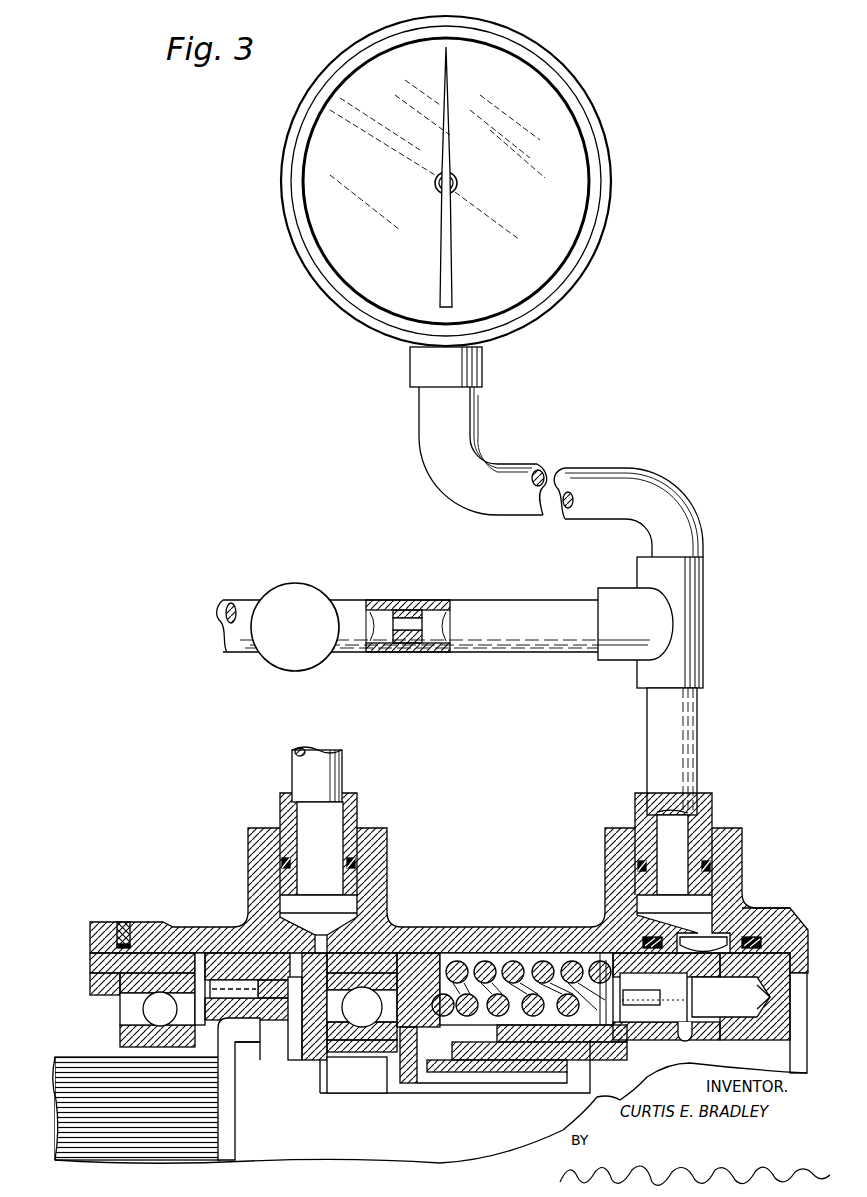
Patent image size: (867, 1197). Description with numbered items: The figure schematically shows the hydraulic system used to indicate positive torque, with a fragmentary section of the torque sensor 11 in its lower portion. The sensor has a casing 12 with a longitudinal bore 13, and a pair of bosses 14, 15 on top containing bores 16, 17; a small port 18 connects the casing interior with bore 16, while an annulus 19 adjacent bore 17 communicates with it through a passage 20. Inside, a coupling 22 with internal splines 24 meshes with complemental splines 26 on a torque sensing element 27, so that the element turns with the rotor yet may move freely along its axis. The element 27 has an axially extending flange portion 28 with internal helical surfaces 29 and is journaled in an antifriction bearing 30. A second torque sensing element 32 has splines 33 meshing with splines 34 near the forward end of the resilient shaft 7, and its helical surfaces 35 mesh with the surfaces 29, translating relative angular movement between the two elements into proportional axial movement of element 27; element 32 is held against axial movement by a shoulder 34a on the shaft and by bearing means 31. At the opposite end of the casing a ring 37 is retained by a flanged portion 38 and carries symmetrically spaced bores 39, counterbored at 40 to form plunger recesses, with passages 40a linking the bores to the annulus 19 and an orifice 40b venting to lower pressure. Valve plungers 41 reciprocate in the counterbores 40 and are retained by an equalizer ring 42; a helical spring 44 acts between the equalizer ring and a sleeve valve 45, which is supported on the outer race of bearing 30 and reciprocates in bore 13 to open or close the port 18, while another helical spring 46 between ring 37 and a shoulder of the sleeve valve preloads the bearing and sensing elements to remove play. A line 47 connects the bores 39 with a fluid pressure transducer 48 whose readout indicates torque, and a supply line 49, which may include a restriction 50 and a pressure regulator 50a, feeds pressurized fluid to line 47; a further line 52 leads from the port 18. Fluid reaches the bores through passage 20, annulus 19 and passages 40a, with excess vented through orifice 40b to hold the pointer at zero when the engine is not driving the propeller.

The resilient shaft 7 is at (355, 1163).
The torque sensor 11 is at (108, 916).
The casing 12 is at (568, 925).
The bore 13 is at (530, 955).
The boss 14 is at (258, 848).
The boss 15 is at (733, 848).
The bore 16 is at (297, 893).
The bore 17 is at (640, 848).
The port 18 is at (315, 935).
The annulus 19 is at (713, 945).
The passage 20 is at (698, 925).
The coupling 22 is at (575, 1062).
The internal splines 24 is at (490, 1068).
The splines 26 is at (430, 1065).
The torque sensing element 27 is at (320, 1055).
The flange portion 28 is at (258, 968).
The helical surfaces 29 is at (238, 975).
The antifriction bearing 30 is at (358, 1015).
The bearing means 31 is at (150, 1007).
The second torque sensing element 32 is at (240, 1022).
The splines 33 is at (150, 1060).
The splines 34 is at (322, 855).
The shoulder 34a is at (228, 1137).
The helical surfaces 35 is at (200, 975).
The ring 37 is at (775, 953).
The flanged portion 38 is at (797, 958).
The bores 39 is at (758, 995).
The counterbored portions 40 is at (690, 1005).
The passages 40a is at (712, 970).
The orifice 40b is at (690, 1030).
The valve plungers 41 is at (653, 997).
The equalizer ring 42 is at (548, 1010).
The helical spring 44 is at (535, 1000).
The sleeve valve 45 is at (392, 930).
The helical spring 46 is at (482, 968).
The line 47 is at (686, 748).
The fluid pressure transducer 48 is at (612, 180).
The supply line 49 is at (495, 653).
The restriction 50 is at (407, 618).
The pressure regulator 50a is at (310, 583).
The line 52 is at (292, 768).